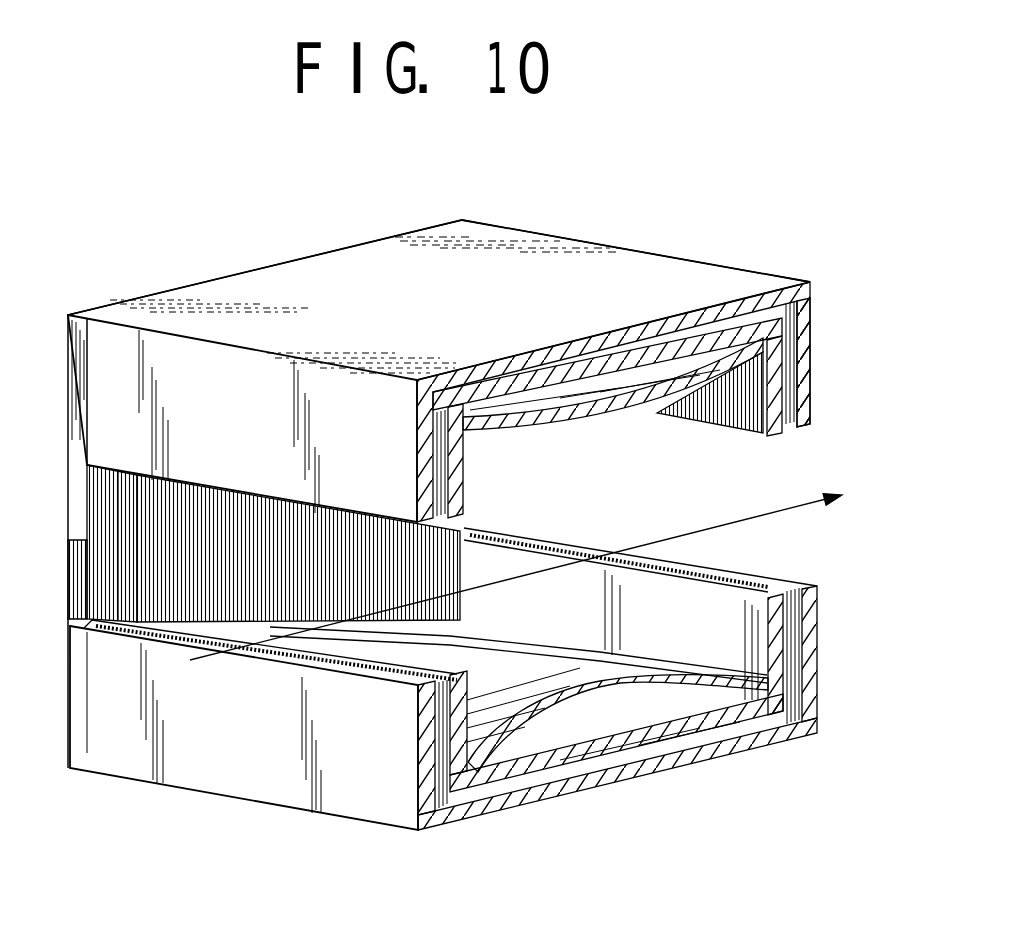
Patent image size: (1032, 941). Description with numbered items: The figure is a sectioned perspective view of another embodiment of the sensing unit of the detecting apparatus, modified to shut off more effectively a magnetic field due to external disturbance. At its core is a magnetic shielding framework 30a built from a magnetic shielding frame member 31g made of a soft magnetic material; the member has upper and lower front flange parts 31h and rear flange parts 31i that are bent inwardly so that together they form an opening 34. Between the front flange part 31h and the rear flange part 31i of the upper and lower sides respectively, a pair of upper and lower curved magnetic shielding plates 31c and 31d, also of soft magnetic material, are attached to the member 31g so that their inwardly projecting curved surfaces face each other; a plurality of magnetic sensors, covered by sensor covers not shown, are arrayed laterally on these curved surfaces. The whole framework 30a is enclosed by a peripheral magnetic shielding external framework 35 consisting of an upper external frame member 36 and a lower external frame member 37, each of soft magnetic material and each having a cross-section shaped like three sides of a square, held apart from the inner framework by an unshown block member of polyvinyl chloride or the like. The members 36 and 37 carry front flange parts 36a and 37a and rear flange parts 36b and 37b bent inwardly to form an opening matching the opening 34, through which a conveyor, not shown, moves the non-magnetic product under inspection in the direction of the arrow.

The magnetic shielding framework 30a is at (785, 325).
The upper curved magnetic shielding plate 31c is at (615, 420).
The lower curved magnetic shielding plate 31d is at (688, 685).
The magnetic shielding frame member 31g is at (570, 378).
The front flange part 31h is at (457, 493).
The rear flange part 31i is at (733, 413).
The opening 34 is at (790, 545).
The magnetic shielding external framework 35 is at (638, 232).
The upper external frame member 36 is at (277, 275).
The front flange part 36a is at (228, 467).
The rear flange part 36b is at (810, 398).
The lower external frame member 37 is at (563, 792).
The front flange part 37a is at (425, 782).
The rear flange part 37b is at (807, 687).